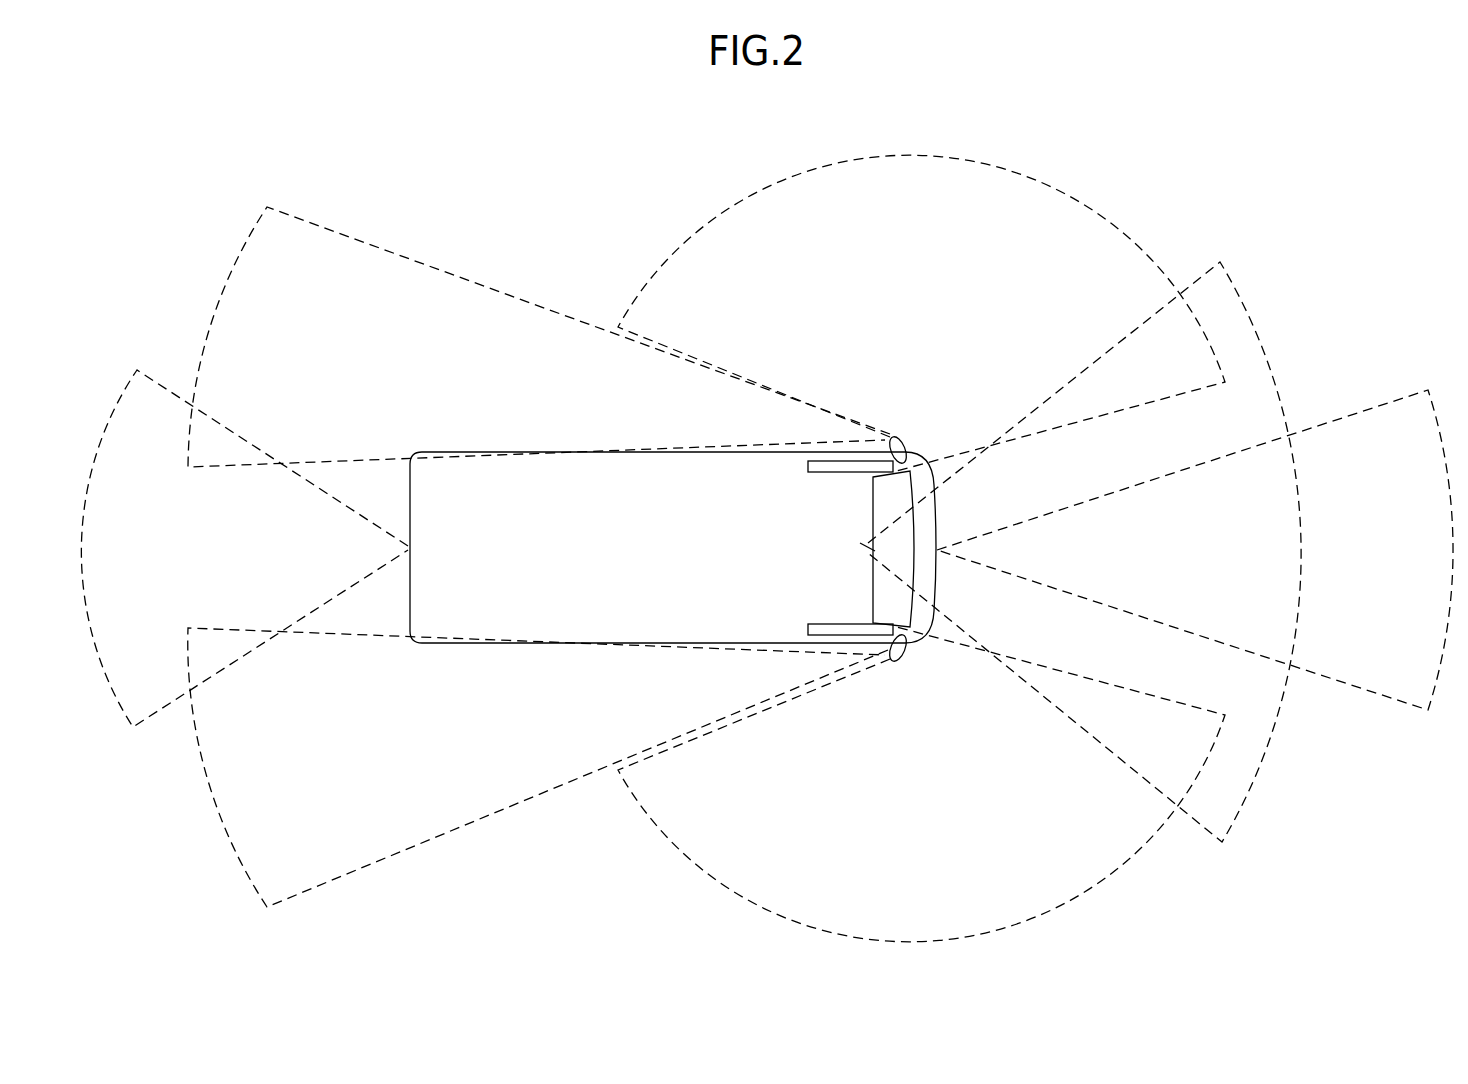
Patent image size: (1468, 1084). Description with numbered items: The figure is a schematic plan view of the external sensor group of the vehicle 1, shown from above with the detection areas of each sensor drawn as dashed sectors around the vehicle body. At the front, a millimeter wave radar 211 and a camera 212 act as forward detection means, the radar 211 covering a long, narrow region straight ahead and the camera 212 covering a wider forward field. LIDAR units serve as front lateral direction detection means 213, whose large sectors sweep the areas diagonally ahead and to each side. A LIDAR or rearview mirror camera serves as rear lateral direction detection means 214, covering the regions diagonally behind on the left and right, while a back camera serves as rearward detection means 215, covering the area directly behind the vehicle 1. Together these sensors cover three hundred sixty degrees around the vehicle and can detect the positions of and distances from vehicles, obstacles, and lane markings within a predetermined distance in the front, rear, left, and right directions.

The vehicle 1 is at (647, 522).
The millimeter wave radar 211 is at (1385, 399).
The camera 212 is at (1263, 343).
The front lateral direction detection means 213 is at (1093, 206).
The rear lateral direction detection means 214 is at (250, 229).
The rearward detection means 215 is at (120, 392).